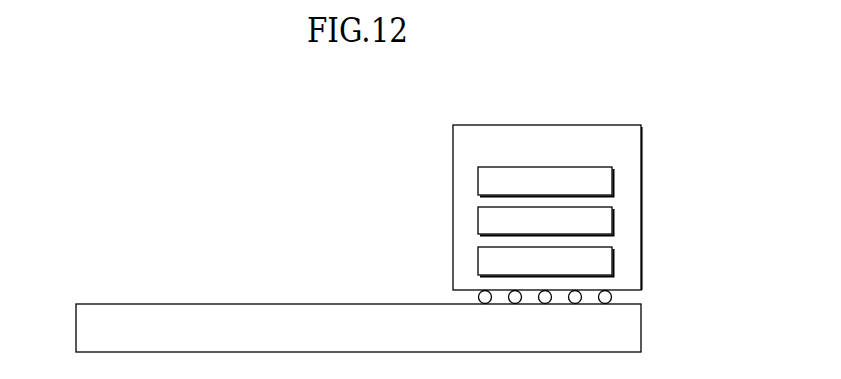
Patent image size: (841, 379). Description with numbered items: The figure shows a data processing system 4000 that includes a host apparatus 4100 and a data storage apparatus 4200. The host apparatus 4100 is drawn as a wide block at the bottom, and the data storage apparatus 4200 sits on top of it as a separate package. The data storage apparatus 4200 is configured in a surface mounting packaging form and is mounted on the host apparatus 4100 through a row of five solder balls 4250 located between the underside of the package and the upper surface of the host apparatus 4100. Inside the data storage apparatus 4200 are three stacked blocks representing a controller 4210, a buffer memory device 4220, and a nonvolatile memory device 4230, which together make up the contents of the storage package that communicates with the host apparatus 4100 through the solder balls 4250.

The data processing system 4000 is at (151, 100).
The host apparatus 4100 is at (138, 337).
The data storage apparatus 4200 is at (569, 154).
The controller 4210 is at (568, 191).
The buffer memory device 4220 is at (568, 230).
The nonvolatile memory device 4230 is at (568, 270).
The solder ball 4250 is at (620, 296).